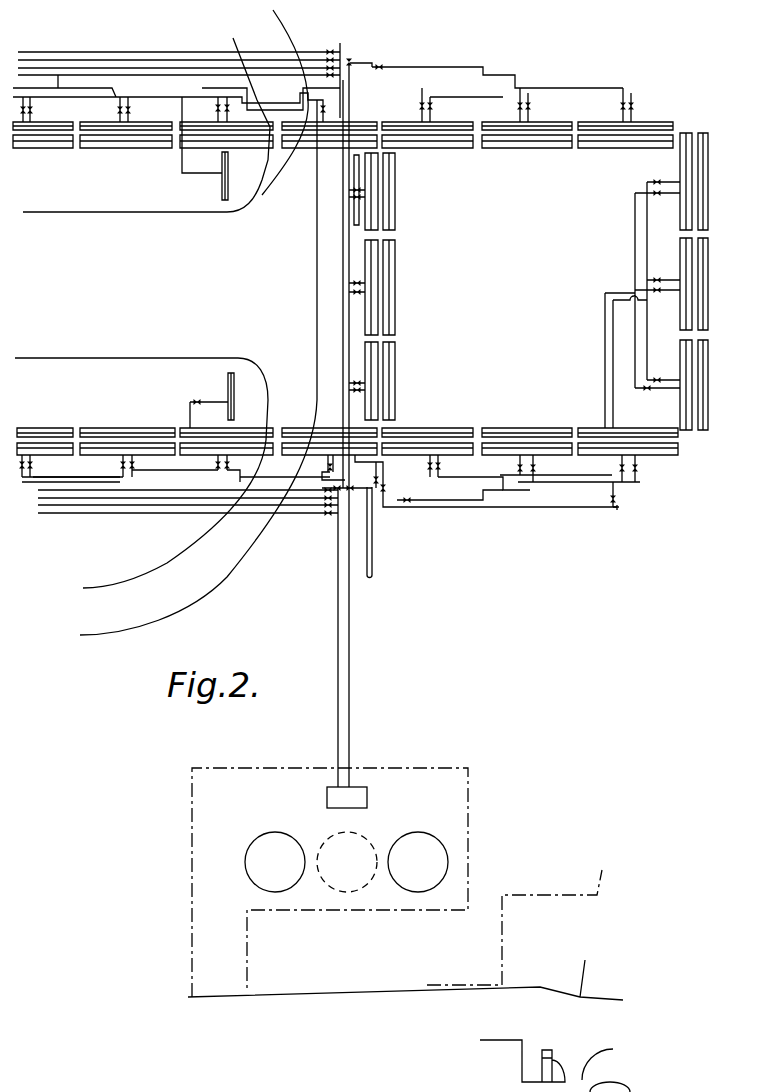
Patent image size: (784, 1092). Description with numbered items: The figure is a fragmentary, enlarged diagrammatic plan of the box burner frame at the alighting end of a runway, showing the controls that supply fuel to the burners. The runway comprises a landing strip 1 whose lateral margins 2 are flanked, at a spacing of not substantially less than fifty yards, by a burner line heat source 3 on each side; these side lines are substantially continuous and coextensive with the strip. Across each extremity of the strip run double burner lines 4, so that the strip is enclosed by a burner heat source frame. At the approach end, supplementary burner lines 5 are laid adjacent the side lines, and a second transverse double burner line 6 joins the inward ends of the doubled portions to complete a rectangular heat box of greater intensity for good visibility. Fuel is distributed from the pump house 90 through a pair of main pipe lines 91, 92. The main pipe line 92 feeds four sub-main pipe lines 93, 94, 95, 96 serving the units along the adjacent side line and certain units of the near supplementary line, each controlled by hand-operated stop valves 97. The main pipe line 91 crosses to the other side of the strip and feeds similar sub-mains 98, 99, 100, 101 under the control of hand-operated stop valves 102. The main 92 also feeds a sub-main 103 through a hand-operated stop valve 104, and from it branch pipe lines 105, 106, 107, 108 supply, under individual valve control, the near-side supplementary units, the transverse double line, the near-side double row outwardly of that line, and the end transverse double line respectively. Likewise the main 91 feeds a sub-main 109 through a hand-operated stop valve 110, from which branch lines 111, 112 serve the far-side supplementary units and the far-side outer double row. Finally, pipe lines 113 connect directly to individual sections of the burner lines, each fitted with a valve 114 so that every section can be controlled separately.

The landing strip 1 is at (146, 161).
The lateral margins 2 is at (113, 358).
The burner line heat source 3 is at (60, 148).
The double burner lines 4 is at (707, 308).
The supplementary burner lines 5 is at (163, 130).
The second transverse double burner line 6 is at (383, 372).
The pump house 90 is at (457, 793).
The main pipe line 91 is at (349, 608).
The main pipe line 92 is at (338, 585).
The sub-main pipe line 93 is at (220, 514).
The sub-main pipe line 94 is at (187, 506).
The sub-main pipe line 95 is at (150, 499).
The sub-main pipe line 96 is at (122, 491).
The hand-operated stop valves 97 is at (331, 513).
The sub-main 98 is at (179, 102).
The sub-main 99 is at (198, 60).
The sub-main 100 is at (163, 67).
The sub-main 101 is at (110, 75).
The hand-operated stop valves 102 is at (328, 70).
The sub-main 103 is at (455, 508).
The hand-operated stop valve 104 is at (365, 490).
The branch pipe line 105 is at (366, 484).
The branch pipe line 106 is at (382, 463).
The branch pipe line 107 is at (483, 509).
The branch pipe line 108 is at (620, 497).
The sub-main 109 is at (383, 64).
The hand-operated stop valve 110 is at (349, 60).
The branch line 111 is at (360, 78).
The branch line 112 is at (450, 67).
The pipe lines 113 is at (128, 117).
The valve 114 is at (27, 108).